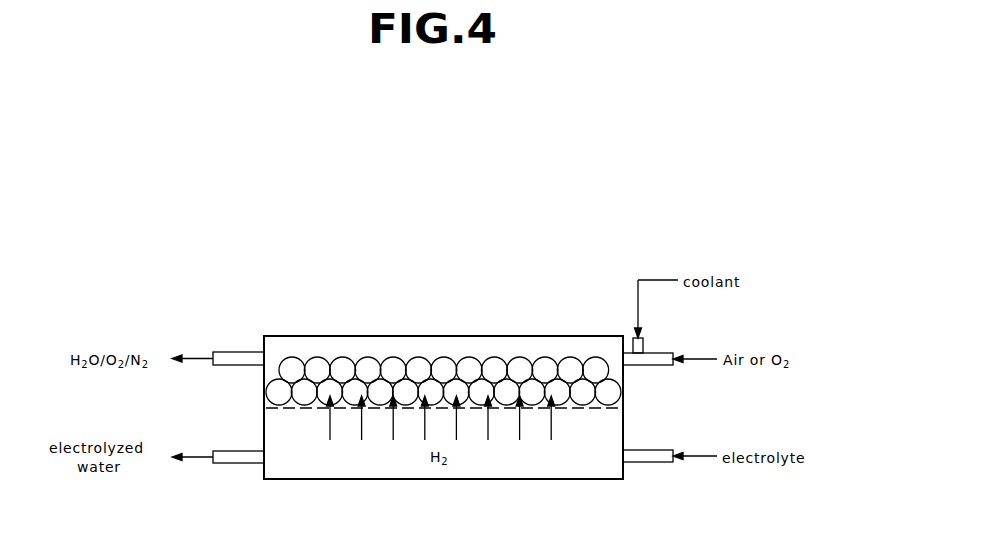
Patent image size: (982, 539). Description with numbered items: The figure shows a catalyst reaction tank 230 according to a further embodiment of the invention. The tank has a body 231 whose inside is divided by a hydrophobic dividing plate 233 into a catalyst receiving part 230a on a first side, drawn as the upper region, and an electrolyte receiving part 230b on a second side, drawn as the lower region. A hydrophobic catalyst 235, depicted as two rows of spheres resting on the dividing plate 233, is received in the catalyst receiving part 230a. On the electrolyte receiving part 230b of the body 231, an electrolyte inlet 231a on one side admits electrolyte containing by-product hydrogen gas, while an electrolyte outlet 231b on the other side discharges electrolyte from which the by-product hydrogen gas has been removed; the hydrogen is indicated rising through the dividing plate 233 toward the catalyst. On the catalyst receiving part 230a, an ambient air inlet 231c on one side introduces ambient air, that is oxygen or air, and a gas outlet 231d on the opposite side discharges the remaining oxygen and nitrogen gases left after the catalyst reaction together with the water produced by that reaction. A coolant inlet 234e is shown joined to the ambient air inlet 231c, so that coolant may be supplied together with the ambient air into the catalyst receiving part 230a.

The catalyst reaction tank 230 is at (358, 336).
The catalyst receiving part 230a is at (584, 340).
The electrolyte receiving part 230b is at (597, 480).
The body 231 is at (478, 336).
The electrolyte inlet 231a is at (656, 463).
The electrolyte outlet 231b is at (232, 456).
The ambient air inlet 231c is at (656, 366).
The gas outlet 231d is at (232, 358).
The hydrophobic dividing plate 233 is at (292, 410).
The coolant inlet 234e is at (644, 346).
The hydrophobic catalyst 235 is at (420, 363).